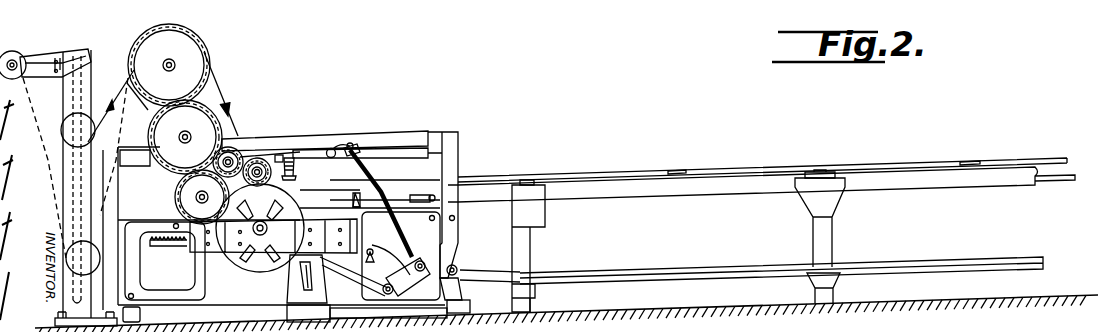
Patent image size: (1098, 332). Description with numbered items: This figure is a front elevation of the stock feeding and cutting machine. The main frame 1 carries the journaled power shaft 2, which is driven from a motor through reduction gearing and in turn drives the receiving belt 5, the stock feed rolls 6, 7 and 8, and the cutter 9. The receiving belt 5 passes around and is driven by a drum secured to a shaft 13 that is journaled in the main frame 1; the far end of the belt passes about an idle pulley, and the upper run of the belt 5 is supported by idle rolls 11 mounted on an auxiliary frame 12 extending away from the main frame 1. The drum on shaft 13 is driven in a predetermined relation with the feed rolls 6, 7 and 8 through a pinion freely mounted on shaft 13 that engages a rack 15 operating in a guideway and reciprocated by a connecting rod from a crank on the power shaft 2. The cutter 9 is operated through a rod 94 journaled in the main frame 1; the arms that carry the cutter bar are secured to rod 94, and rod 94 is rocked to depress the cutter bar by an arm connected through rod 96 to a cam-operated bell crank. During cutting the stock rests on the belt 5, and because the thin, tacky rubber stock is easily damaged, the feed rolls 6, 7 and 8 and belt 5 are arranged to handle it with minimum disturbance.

The main frame 1 is at (456, 143).
The power shaft 2 is at (446, 275).
The receiving belt 5 is at (738, 172).
The stock feed roll 6 is at (266, 152).
The stock feed roll 7 is at (240, 147).
The stock feed roll 8 is at (207, 50).
The cutter 9 is at (303, 170).
The idle rolls 11 is at (523, 183).
The auxiliary frame 12 is at (600, 195).
The shaft 13 is at (250, 278).
The rack 15 is at (156, 247).
The rod 94 is at (334, 150).
The rod 96 is at (378, 200).